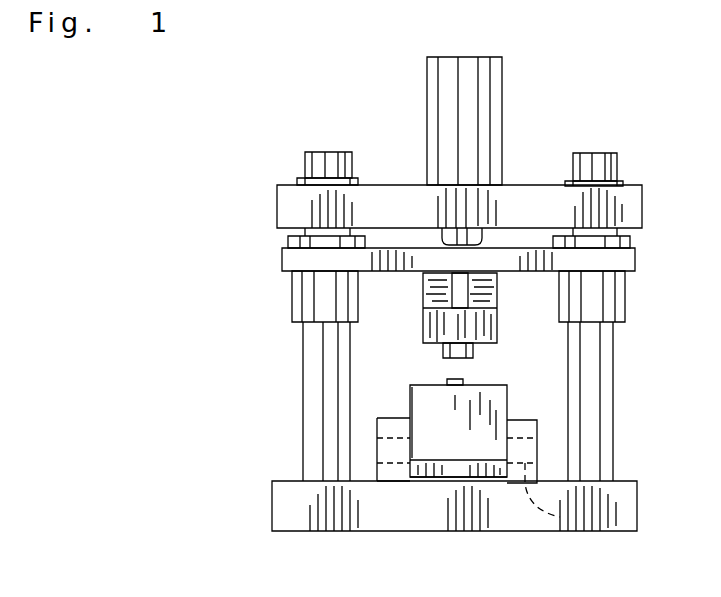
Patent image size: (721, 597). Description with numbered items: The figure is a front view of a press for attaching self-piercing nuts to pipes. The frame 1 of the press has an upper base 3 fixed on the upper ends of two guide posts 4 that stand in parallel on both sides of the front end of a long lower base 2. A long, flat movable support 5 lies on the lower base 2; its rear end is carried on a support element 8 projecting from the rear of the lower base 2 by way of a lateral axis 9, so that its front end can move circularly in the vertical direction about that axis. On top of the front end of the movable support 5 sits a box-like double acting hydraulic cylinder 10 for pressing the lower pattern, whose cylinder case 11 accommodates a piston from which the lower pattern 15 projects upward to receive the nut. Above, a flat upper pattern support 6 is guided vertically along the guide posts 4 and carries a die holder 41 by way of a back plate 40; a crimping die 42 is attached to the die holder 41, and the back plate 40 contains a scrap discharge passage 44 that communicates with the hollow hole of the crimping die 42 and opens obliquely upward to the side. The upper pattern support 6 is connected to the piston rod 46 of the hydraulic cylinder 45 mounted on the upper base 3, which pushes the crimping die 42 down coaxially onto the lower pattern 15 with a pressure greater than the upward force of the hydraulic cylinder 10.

The frame 1 is at (655, 276).
The lower base 2 is at (628, 497).
The upper base 3 is at (632, 200).
The guide posts 4 is at (325, 382).
The movable support 5 is at (445, 468).
The upper pattern support 6 is at (518, 250).
The support element 8 is at (532, 427).
The lateral axis 9 is at (554, 518).
The hydraulic cylinder for pressing the lower pattern 10 is at (528, 402).
The cylinder case 11 is at (418, 405).
The lower pattern 15 is at (447, 379).
The back plate 40 is at (497, 280).
The die holder 41 is at (480, 331).
The crimping die 42 is at (468, 346).
The scrap discharge passage 44 is at (460, 291).
The hydraulic cylinder for pressing the upper pattern 45 is at (440, 92).
The piston rod 46 is at (442, 237).